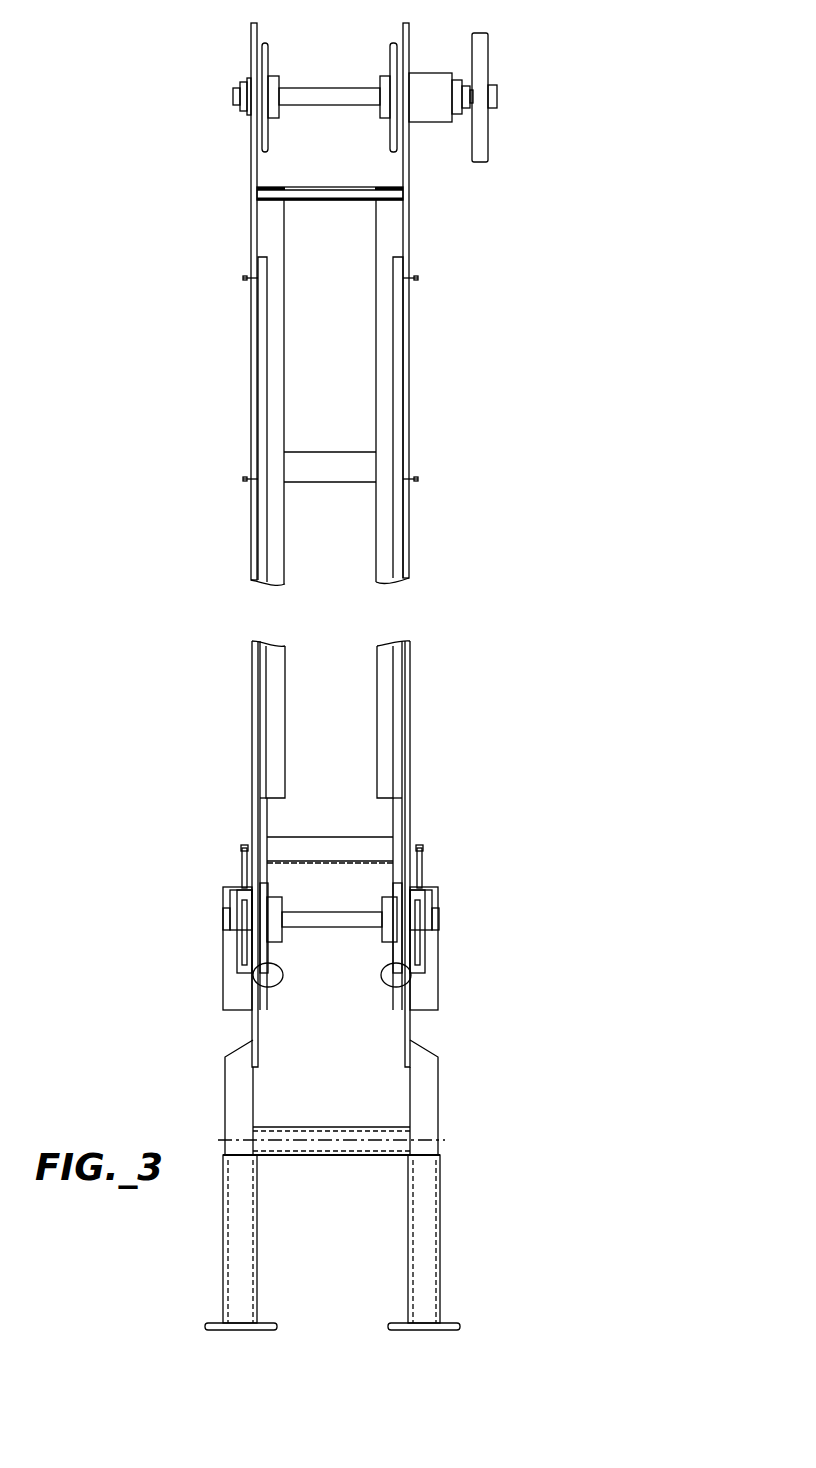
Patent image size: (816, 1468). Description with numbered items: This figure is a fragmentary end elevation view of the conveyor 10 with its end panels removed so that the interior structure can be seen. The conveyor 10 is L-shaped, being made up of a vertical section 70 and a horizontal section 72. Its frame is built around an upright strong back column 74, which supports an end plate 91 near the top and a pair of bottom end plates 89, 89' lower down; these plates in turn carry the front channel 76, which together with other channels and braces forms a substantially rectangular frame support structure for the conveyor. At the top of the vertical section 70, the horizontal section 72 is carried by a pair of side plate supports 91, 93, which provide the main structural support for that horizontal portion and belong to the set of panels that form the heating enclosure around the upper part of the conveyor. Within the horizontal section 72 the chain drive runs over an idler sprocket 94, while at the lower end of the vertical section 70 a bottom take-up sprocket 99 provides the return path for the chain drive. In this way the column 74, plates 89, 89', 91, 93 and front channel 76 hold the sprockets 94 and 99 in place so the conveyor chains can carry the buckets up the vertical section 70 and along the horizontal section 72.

The conveyor 10 is at (200, 376).
The vertical section 70 is at (456, 530).
The horizontal section 72 is at (420, 36).
The upright strong back column 74 is at (376, 330).
The front channel 76 is at (258, 463).
The bottom end plate 89 is at (438, 854).
The bottom end plate 89' is at (225, 854).
The end plate / side plate support 91 is at (251, 194).
The side plate support 93 is at (405, 233).
The idler sprocket 94 is at (390, 50).
The bottom take-up sprocket 99 is at (268, 978).